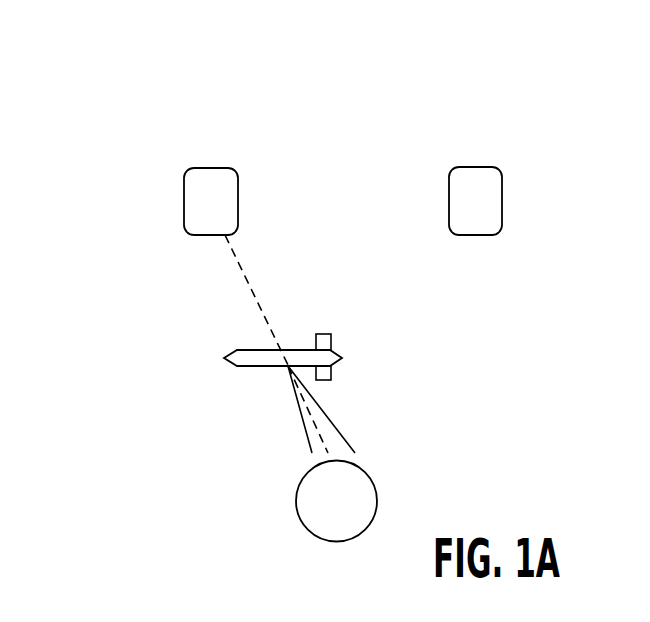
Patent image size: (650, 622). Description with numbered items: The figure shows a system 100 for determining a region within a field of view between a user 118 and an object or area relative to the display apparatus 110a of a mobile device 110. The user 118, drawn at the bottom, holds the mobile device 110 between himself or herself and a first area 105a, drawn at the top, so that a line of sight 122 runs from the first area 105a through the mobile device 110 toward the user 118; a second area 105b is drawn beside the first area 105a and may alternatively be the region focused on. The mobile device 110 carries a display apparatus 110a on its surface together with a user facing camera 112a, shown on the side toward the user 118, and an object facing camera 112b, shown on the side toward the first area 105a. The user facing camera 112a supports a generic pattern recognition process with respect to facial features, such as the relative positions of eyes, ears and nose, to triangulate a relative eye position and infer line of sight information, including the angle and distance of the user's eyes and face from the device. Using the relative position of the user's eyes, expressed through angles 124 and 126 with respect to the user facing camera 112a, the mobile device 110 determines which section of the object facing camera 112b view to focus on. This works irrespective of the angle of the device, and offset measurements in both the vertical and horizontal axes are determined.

The system 100 is at (131, 110).
The first area 105a is at (208, 178).
The second area 105b is at (474, 178).
The mobile device 110 is at (242, 366).
The display apparatus 110a is at (262, 348).
The user facing camera 112a is at (333, 374).
The object facing camera 112b is at (327, 335).
The user 118 is at (300, 522).
The line of sight 122 is at (245, 272).
The angle 124 is at (313, 438).
The angle 126 is at (337, 437).